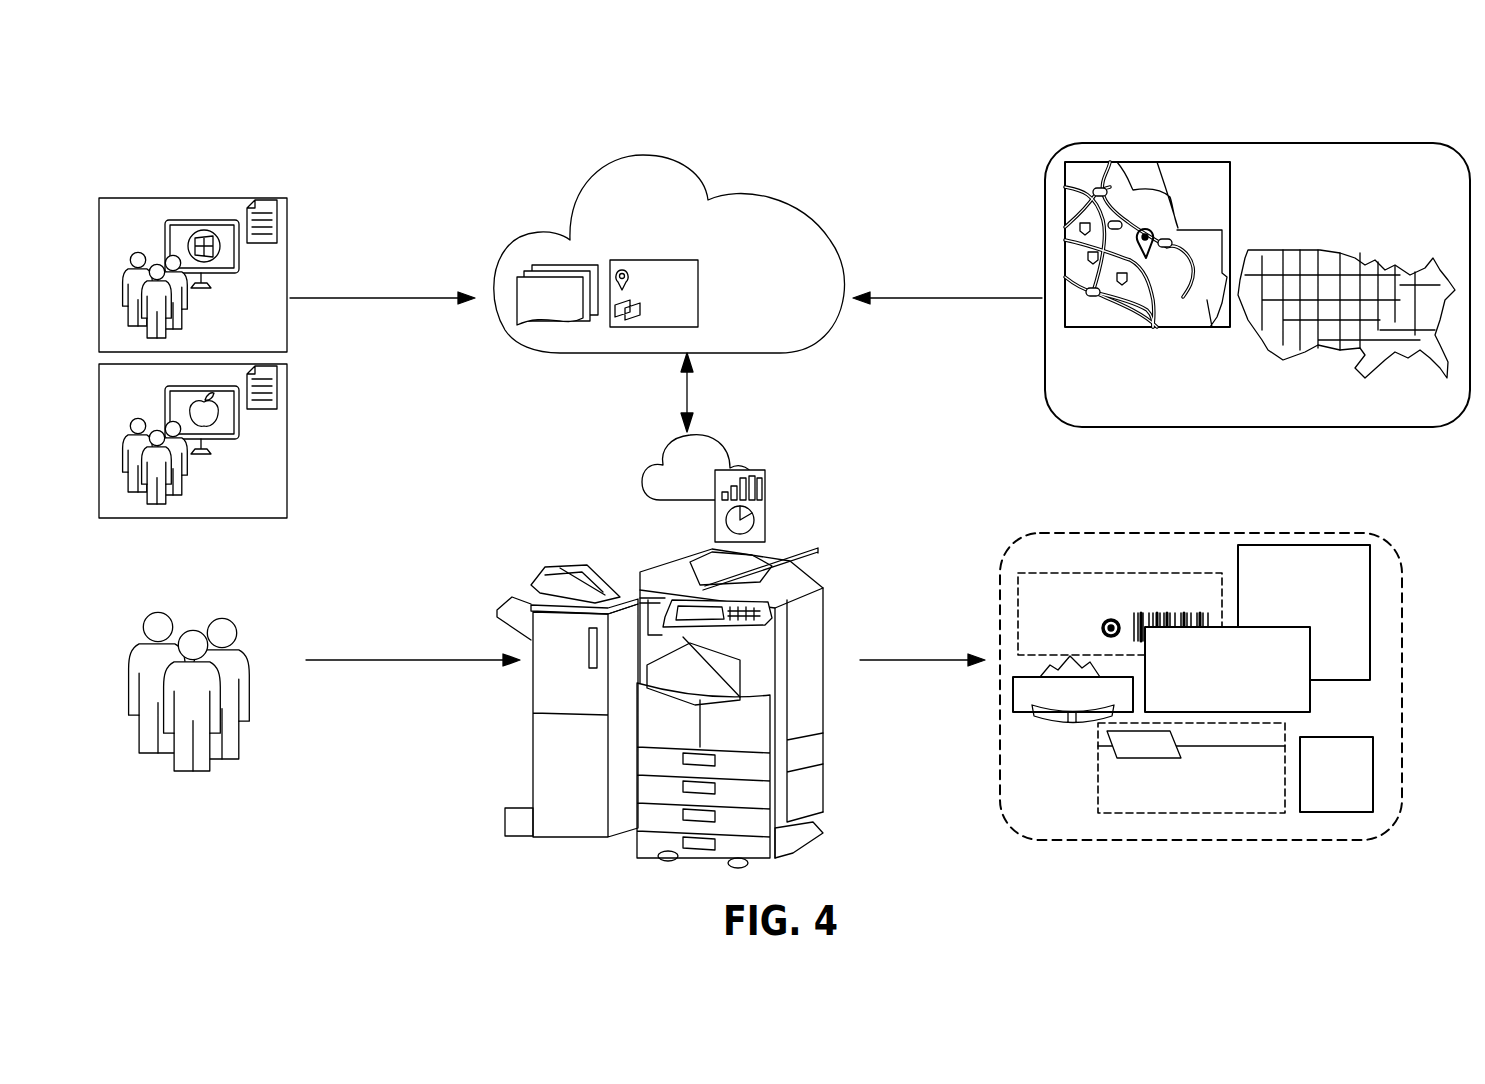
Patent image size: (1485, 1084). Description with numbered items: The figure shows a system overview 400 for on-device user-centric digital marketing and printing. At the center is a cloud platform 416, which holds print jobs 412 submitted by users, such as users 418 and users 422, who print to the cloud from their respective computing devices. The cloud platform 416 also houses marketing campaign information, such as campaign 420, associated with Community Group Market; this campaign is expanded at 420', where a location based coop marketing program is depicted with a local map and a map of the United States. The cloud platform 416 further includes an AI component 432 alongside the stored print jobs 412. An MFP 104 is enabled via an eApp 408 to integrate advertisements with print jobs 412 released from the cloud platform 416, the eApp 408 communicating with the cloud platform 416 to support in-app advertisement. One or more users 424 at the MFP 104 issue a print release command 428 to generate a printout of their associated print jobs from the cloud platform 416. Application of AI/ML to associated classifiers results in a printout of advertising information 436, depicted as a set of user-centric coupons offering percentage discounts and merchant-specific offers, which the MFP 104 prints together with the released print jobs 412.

The system overview 400 is at (1310, 117).
The users 418 is at (289, 248).
The users 422 is at (289, 457).
The print jobs 412 is at (518, 318).
The cloud platform 416 is at (757, 199).
The AI engine 432 is at (662, 315).
The campaign 420 is at (806, 322).
The expanded campaign 420' is at (1257, 319).
The eApp 408 is at (642, 490).
The MFP 104 is at (584, 838).
The print release command 428 is at (402, 663).
The users 424 is at (218, 752).
The advertising information 436 is at (1187, 840).